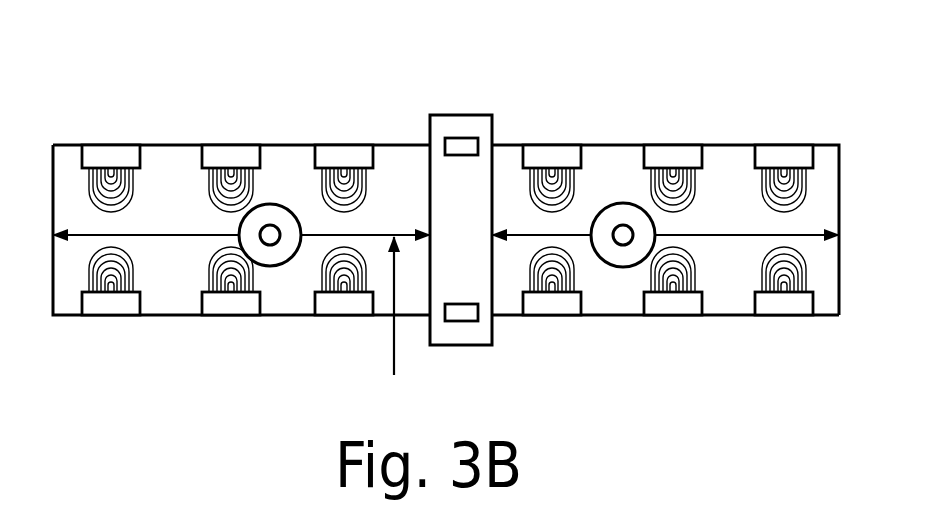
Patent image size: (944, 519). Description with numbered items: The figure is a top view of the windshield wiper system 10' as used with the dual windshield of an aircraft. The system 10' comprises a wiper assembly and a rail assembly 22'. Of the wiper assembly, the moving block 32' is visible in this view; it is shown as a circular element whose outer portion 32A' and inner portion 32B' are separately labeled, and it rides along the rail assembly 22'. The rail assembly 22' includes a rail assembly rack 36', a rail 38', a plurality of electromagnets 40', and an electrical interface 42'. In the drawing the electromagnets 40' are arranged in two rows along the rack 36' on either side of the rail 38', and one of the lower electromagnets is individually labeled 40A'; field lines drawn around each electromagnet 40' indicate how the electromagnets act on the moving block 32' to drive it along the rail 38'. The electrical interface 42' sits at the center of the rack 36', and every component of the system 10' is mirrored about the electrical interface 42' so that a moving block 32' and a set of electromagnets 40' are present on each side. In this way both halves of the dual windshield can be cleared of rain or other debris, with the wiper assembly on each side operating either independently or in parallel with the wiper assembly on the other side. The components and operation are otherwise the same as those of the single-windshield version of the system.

The windshield wiper system 10' is at (446, 221).
The rail assembly 22' is at (446, 232).
The moving block 32' is at (622, 205).
The outer roller 32A' is at (639, 141).
The roller shaft 32B' is at (595, 151).
The rail assembly rack 36' is at (446, 293).
The rail 38' is at (396, 323).
The plurality of electromagnets 40' is at (447, 128).
The lower magnet 40A' is at (447, 325).
The electrical interface 42' is at (459, 173).